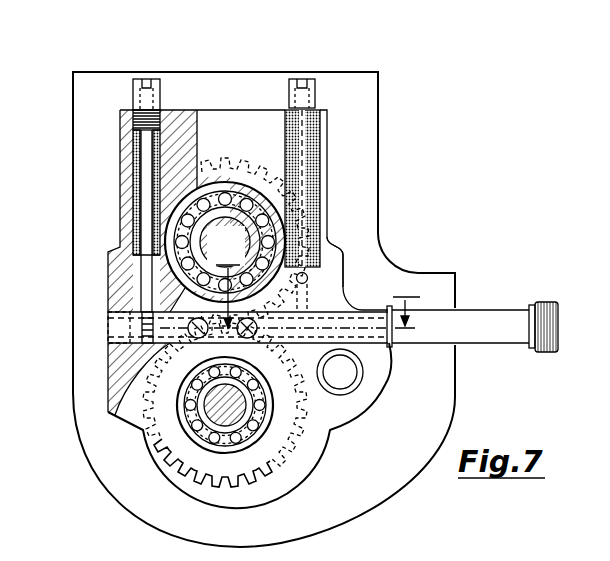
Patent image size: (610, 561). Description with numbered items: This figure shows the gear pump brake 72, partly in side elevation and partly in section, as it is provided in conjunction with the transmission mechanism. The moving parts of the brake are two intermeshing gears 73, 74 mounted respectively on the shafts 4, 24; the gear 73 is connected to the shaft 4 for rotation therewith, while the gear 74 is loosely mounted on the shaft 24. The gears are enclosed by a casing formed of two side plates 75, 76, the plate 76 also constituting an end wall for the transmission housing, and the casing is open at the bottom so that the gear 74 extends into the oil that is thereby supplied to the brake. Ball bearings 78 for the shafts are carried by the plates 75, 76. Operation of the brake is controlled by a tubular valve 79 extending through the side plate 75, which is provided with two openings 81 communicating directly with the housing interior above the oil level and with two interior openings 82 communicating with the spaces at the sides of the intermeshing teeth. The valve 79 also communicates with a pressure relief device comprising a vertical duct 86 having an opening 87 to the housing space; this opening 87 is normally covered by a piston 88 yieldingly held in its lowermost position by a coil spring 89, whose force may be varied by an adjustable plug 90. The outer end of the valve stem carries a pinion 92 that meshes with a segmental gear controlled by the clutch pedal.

The shaft 4 is at (300, 237).
The shaft 24 is at (268, 394).
The gear pump brake 72 is at (370, 216).
The gear 73 is at (243, 158).
The gear 74 is at (298, 465).
The side plate 75 is at (372, 385).
The side plate 76 is at (250, 245).
The ball bearings 78 is at (220, 436).
The tubular valve 79 is at (477, 322).
The openings 81 is at (230, 337).
The interior openings 82 is at (108, 327).
The vertical duct 86 is at (307, 302).
The opening 87 is at (307, 277).
The piston 88 is at (308, 118).
The coil spring 89 is at (136, 178).
The adjustable plug 90 is at (137, 95).
The pinion 92 is at (559, 322).